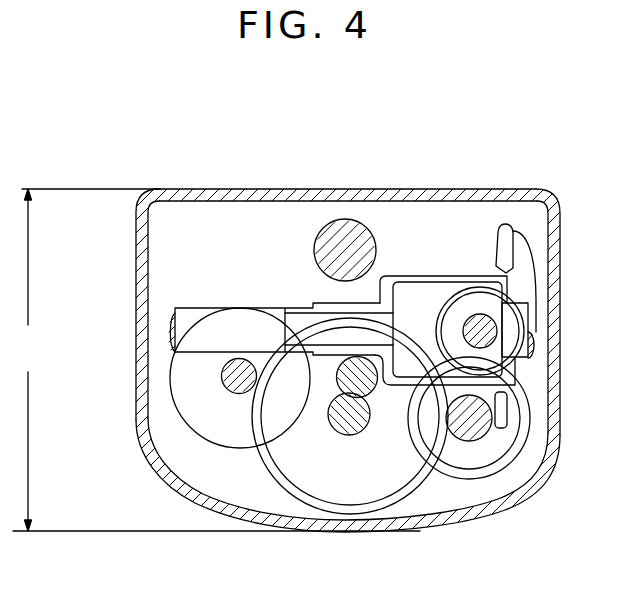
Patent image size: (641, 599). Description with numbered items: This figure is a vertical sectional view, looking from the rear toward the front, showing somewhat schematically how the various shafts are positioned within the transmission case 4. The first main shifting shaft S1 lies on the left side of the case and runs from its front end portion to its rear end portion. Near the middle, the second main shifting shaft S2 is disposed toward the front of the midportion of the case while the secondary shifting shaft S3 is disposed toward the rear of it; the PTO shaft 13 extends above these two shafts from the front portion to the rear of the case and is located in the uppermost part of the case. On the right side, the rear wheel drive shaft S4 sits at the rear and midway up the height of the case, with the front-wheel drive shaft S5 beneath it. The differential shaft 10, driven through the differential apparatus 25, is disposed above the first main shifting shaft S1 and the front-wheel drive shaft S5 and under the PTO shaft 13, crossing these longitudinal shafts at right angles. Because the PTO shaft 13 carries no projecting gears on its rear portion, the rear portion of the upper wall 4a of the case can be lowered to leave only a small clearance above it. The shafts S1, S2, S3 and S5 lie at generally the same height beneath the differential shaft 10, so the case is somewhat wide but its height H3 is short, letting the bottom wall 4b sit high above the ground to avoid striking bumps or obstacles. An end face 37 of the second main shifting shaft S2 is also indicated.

The transmission case 4 is at (561, 398).
The upper wall of the transmission case 4a is at (388, 188).
The bottom wall of the transmission case 4b is at (363, 532).
The differential shaft 10 is at (198, 317).
The PTO shaft 13 is at (313, 243).
The differential apparatus 25 is at (445, 276).
The end face of the second main shifting shaft 37 is at (526, 256).
The first main shifting shaft S1 is at (238, 393).
The second main shifting shaft S2 is at (365, 395).
The secondary shifting shaft S3 is at (340, 422).
The rear wheel drive shaft S4 is at (466, 320).
The front-wheel drive shaft S5 is at (458, 443).
The height of the transmission case H3 is at (216, 360).